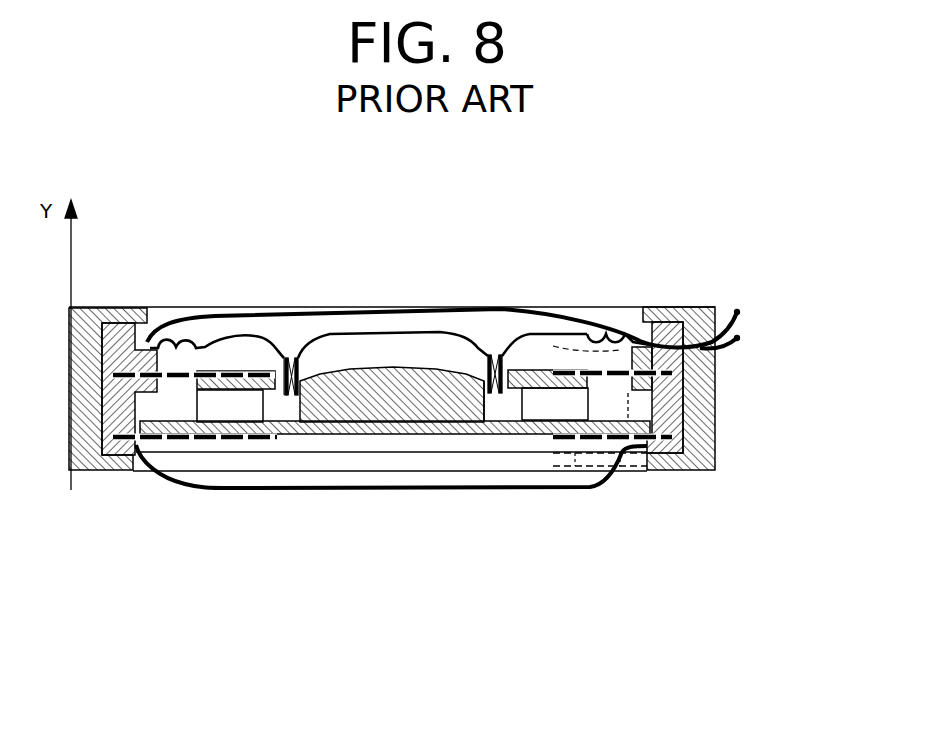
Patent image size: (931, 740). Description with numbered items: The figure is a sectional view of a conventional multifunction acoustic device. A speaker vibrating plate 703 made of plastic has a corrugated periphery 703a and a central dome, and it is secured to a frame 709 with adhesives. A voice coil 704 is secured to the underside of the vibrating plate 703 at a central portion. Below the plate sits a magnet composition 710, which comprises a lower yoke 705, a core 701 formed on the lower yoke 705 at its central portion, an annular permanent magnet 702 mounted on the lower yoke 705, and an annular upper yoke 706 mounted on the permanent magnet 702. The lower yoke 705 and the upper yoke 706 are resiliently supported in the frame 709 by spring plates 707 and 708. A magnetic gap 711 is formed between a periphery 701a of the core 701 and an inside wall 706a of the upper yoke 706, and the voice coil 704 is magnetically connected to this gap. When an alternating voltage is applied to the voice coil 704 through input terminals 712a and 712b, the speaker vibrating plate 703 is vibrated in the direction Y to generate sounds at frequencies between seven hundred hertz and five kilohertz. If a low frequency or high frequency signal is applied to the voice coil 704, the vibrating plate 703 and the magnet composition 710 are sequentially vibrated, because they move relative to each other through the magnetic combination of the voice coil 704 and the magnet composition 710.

The core 701 is at (390, 415).
The periphery of the core 701a is at (490, 385).
The annular permanent magnet 702 is at (260, 434).
The speaker vibrating plate 703 is at (540, 332).
The corrugated periphery 703a is at (625, 327).
The voice coil 704 is at (492, 356).
The lower yoke 705 is at (247, 403).
The annular upper yoke 706 is at (252, 372).
The inside wall of the upper yoke 706a is at (268, 372).
The spring plate 707 is at (617, 378).
The spring plate 708 is at (613, 467).
The frame 709 is at (690, 470).
The magnet composition 710 is at (213, 460).
The magnetic gap 711 is at (287, 355).
The input terminal 712a is at (737, 310).
The input terminal 712b is at (737, 338).